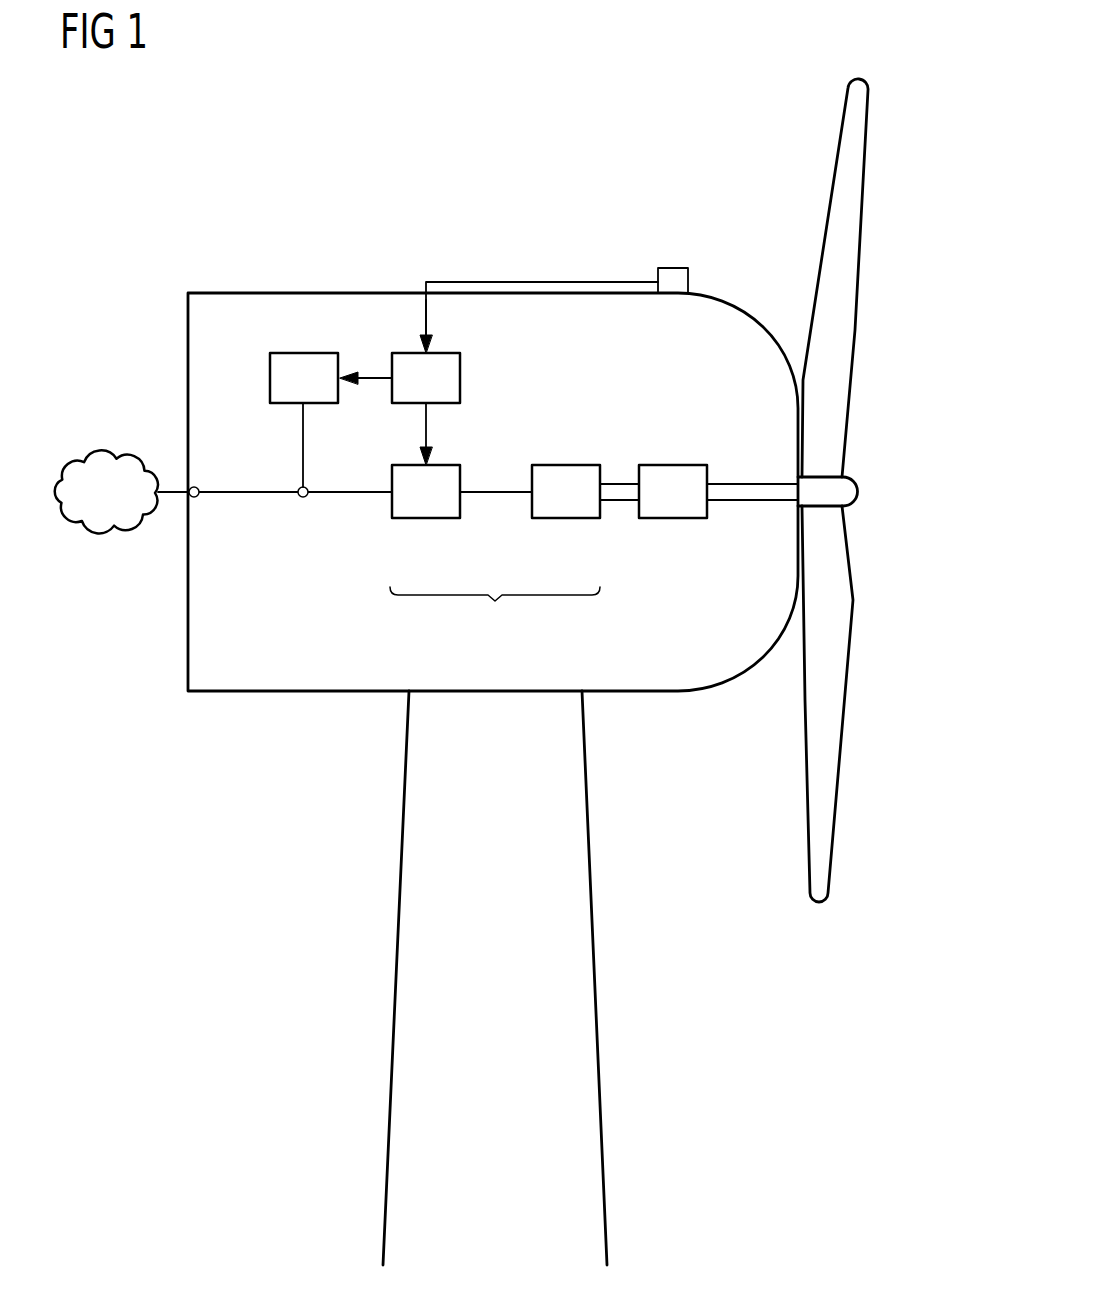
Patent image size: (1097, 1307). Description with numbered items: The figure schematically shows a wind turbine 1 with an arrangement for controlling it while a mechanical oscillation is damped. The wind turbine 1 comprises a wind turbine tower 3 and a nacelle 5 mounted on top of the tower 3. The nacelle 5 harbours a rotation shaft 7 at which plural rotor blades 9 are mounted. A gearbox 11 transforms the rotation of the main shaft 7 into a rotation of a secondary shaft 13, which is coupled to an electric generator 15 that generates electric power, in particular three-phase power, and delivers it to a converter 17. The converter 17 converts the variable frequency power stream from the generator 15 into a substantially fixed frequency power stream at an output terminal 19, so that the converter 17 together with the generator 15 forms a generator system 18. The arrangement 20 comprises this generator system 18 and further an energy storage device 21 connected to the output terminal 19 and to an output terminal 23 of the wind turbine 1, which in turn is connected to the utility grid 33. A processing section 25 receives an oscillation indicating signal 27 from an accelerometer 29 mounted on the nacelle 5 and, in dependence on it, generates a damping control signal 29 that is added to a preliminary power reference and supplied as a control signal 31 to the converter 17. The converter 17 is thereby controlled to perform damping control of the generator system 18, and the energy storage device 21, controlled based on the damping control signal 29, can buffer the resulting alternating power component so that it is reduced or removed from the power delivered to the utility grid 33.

The wind turbine 1 is at (916, 95).
The wind turbine tower 3 is at (395, 963).
The nacelle 5 is at (298, 293).
The rotation shaft 7 is at (760, 490).
The rotor blades 9 is at (858, 258).
The gearbox 11 is at (672, 465).
The secondary shaft 13 is at (620, 492).
The electric generator 15 is at (563, 518).
The converter 17 is at (425, 518).
The generator system 18 is at (495, 613).
The output terminal of the converter 19 is at (302, 498).
The arrangement for controlling the wind turbine 20 is at (572, 253).
The energy storage device 21 is at (270, 378).
The output terminal of the wind turbine 23 is at (198, 497).
The processing section 25 is at (460, 377).
The oscillation indicating signal 27 is at (432, 350).
The accelerometer / damping control signal 29 is at (673, 278).
The control signal 31 is at (432, 463).
The utility grid 33 is at (108, 455).